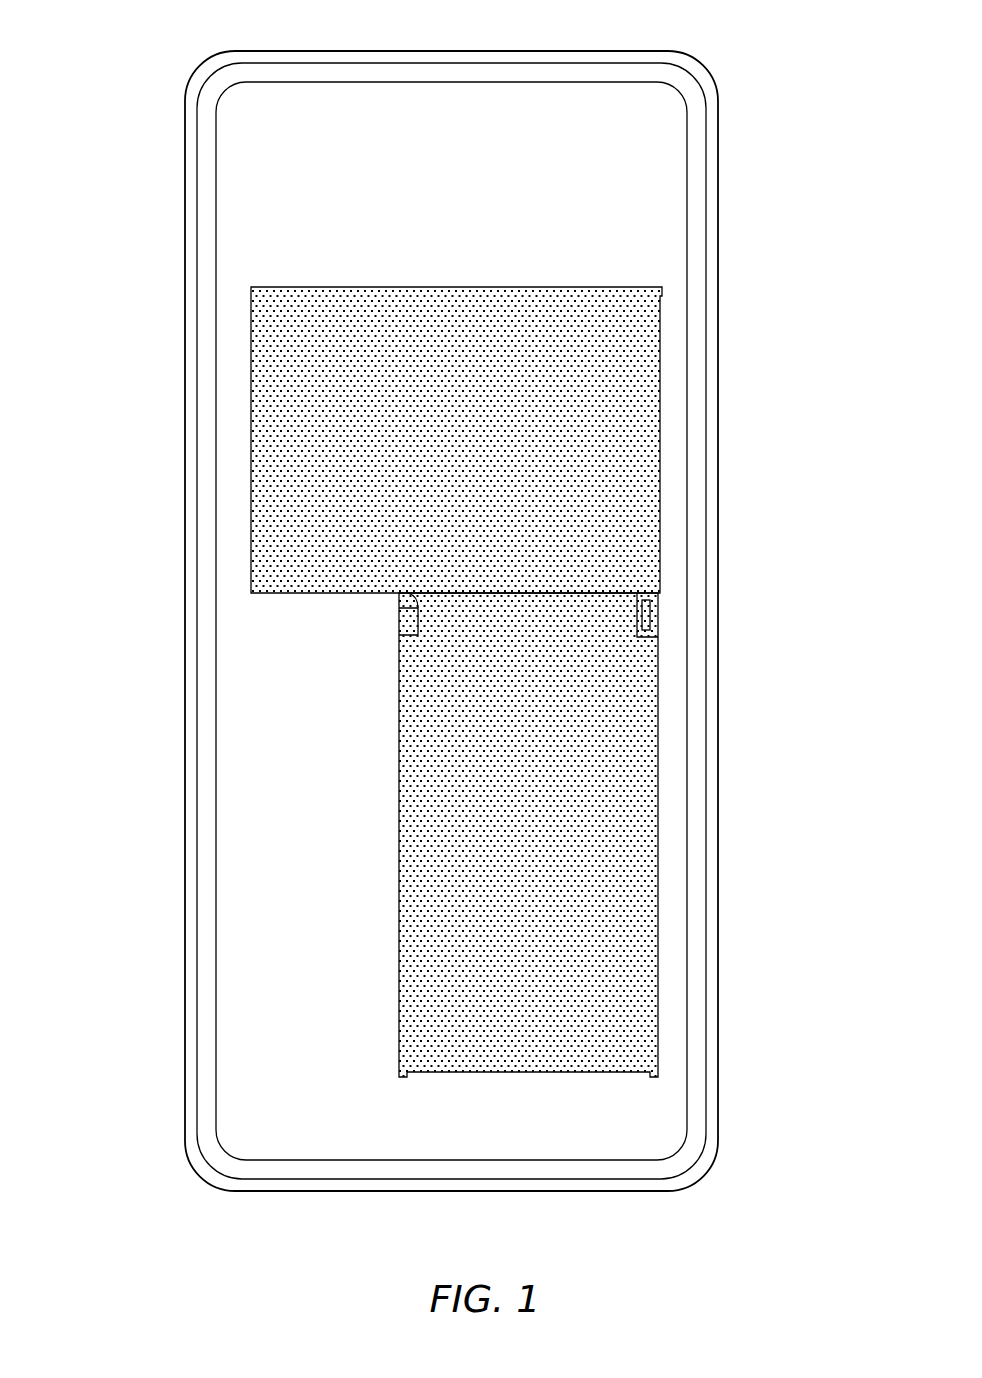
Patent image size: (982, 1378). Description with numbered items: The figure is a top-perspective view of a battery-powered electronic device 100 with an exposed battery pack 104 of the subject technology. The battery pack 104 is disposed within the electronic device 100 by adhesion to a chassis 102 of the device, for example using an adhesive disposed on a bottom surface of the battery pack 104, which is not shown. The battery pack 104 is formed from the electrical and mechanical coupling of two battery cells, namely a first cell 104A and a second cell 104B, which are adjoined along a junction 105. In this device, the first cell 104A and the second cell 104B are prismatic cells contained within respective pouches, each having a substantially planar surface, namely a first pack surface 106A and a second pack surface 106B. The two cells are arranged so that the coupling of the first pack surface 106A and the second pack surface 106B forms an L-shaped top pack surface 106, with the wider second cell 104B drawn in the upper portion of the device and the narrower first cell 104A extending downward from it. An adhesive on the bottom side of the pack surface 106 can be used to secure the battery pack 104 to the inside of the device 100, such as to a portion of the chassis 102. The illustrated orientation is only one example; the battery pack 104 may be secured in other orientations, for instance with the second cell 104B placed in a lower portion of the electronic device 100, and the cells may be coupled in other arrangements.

The battery-powered electronic device 100 is at (475, 25).
The chassis 102 is at (683, 132).
The battery pack 104 is at (483, 263).
The first cell 104A is at (606, 835).
The second cell 104B is at (536, 433).
The junction 105 is at (630, 591).
The L-shaped top pack surface 106 is at (435, 675).
The first pack surface 106A is at (652, 748).
The second pack surface 106B is at (660, 303).